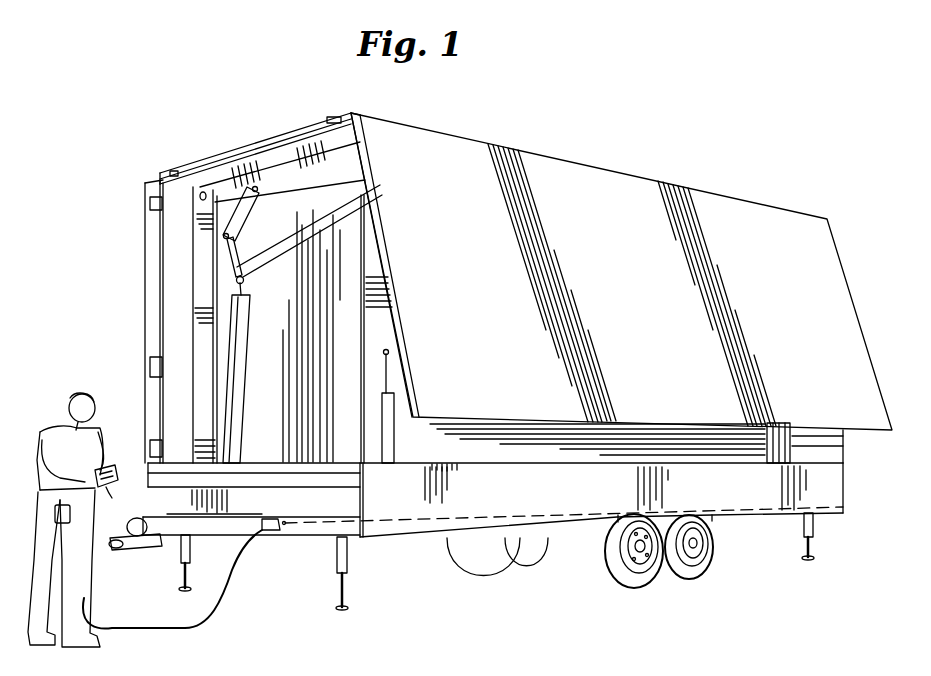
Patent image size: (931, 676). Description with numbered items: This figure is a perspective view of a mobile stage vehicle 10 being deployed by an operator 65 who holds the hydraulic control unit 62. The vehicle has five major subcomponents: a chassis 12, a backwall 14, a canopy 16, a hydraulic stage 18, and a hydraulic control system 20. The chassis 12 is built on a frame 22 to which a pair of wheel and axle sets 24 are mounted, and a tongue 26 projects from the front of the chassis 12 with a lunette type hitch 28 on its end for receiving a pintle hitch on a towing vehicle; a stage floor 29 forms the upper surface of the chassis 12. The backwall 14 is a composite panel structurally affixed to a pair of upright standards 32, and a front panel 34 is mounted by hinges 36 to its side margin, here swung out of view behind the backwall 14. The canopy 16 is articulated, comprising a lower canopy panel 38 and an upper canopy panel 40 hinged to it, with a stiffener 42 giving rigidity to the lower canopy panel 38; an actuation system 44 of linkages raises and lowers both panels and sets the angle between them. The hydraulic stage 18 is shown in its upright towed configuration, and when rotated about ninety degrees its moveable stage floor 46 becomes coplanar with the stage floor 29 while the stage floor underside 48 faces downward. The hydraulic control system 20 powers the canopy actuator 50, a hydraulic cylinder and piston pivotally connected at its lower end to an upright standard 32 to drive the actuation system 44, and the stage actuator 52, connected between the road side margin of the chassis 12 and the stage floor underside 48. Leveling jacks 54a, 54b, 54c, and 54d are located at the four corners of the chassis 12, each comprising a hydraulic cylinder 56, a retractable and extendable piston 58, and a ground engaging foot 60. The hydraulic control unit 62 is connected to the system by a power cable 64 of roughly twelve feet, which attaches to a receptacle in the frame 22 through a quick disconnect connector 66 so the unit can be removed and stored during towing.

The mobile stage vehicle 10 is at (520, 128).
The chassis 12 is at (385, 522).
The backwall 14 is at (175, 328).
The canopy 16 is at (262, 137).
The hydraulic stage 18 is at (375, 450).
The hydraulic control system 20 is at (113, 482).
The frame 22 is at (308, 538).
The wheel and axle sets 24 is at (562, 545).
The tongue 26 is at (205, 528).
The lunette type hitch 28 is at (128, 545).
The stage floor 29 is at (333, 462).
The upright standards 32 is at (197, 272).
The front panel 34 is at (160, 240).
The hinges 36 is at (152, 201).
The lower canopy panel 38 is at (236, 165).
The upper canopy panel 40 is at (500, 400).
The stiffener 42 is at (320, 157).
The actuation system 44 is at (246, 272).
The moveable stage floor 46 is at (360, 347).
The stage floor underside 48 is at (398, 447).
The canopy actuator 50 is at (225, 377).
The stage actuator 52 is at (389, 420).
The leveling jack 54a is at (354, 592).
The leveling jack 54b is at (812, 550).
The leveling jack 54c is at (700, 548).
The leveling jack 54d is at (183, 578).
The hydraulic cylinder 56 is at (350, 567).
The piston 58 is at (338, 590).
The ground engaging foot 60 is at (343, 608).
The hydraulic control unit 62 is at (110, 462).
The power cable 64 is at (208, 617).
The operator 65 is at (76, 410).
The quick disconnect connector 66 is at (279, 528).